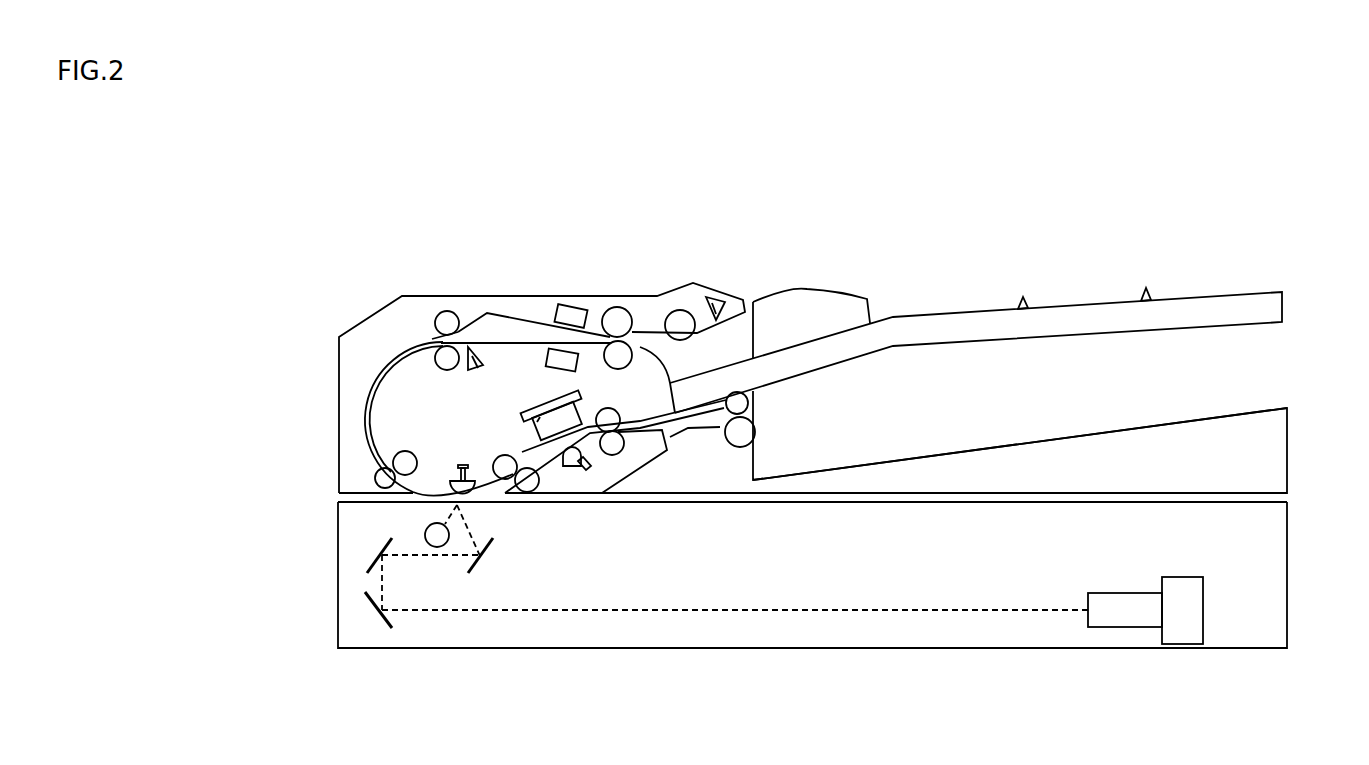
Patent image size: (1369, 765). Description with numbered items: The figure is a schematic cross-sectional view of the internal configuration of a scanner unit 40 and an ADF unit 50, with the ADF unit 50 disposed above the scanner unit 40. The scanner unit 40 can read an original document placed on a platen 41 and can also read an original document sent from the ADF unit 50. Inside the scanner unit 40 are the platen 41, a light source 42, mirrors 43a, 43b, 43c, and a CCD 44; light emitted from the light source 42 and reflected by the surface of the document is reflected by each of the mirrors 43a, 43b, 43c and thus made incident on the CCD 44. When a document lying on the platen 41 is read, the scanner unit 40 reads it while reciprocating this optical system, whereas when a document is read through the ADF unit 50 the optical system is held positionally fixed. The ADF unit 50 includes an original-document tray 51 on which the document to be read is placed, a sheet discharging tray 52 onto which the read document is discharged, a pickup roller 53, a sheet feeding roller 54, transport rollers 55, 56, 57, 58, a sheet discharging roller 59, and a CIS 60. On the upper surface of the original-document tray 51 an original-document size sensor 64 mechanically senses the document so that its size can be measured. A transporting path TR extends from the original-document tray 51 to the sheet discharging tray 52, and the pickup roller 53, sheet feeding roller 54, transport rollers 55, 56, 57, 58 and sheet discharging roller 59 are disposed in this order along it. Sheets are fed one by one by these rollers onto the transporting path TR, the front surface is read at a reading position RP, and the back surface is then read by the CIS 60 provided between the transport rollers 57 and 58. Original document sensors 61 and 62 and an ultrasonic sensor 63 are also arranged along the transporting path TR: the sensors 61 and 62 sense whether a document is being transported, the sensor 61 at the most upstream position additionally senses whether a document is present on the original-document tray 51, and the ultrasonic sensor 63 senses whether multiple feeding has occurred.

The scanner unit 40 is at (305, 577).
The platen 41 is at (1267, 502).
The light source 42 is at (428, 531).
The mirror 43a is at (478, 570).
The mirror 43b is at (384, 547).
The mirror 43c is at (384, 622).
The CCD 44 is at (1118, 603).
The ADF unit 50 is at (305, 437).
The original-document tray 51 is at (937, 317).
The sheet discharging tray 52 is at (933, 456).
The pickup roller 53 is at (685, 318).
The sheet feeding roller 54 is at (619, 316).
The transport roller 55 is at (449, 320).
The transport roller 56 is at (375, 478).
The transport roller 57 is at (504, 462).
The transport roller 58 is at (606, 411).
The sheet discharging roller 59 is at (752, 433).
The CIS 60 is at (541, 417).
The original document sensor 61 is at (723, 308).
The original document sensor 62 is at (479, 372).
The ultrasonic sensor 63 is at (576, 307).
The original-document size sensor 64 is at (1147, 290).
The reading position RP is at (457, 505).
The transporting path TR is at (371, 388).